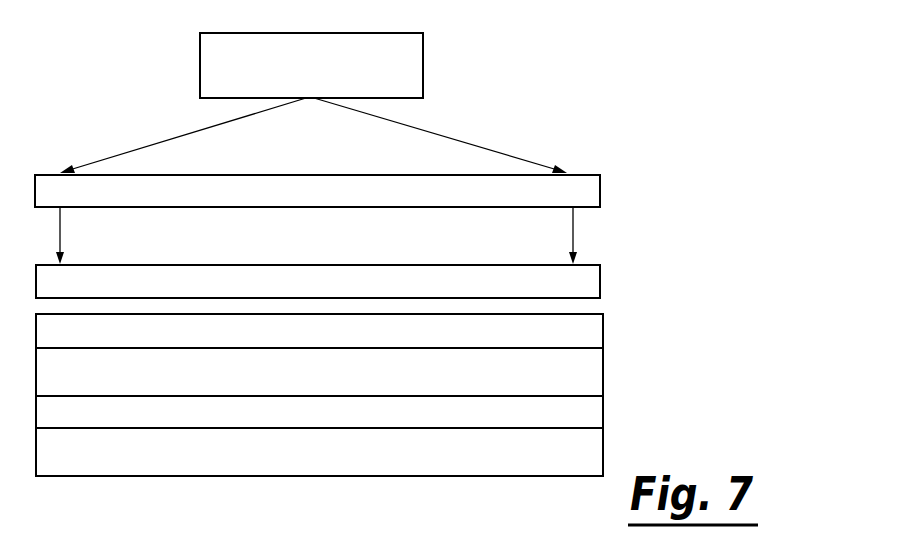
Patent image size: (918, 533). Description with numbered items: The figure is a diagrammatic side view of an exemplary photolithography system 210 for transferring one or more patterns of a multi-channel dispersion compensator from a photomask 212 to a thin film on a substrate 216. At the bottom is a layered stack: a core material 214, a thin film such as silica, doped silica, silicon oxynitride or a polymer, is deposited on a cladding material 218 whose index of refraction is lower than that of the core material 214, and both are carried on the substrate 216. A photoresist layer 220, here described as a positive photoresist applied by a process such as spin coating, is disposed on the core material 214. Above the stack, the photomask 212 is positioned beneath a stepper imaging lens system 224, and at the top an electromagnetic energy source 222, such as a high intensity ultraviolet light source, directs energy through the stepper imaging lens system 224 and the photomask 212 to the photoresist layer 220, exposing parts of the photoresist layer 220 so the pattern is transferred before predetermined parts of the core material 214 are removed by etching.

The photolithography system 210 is at (608, 52).
The photomask 212 is at (600, 277).
The core material 214 is at (603, 374).
The substrate 216 is at (603, 462).
The cladding material 218 is at (603, 408).
The photoresist layer 220 is at (603, 328).
The electromagnetic energy source 222 is at (423, 66).
The stepper imaging lens system 224 is at (600, 189).